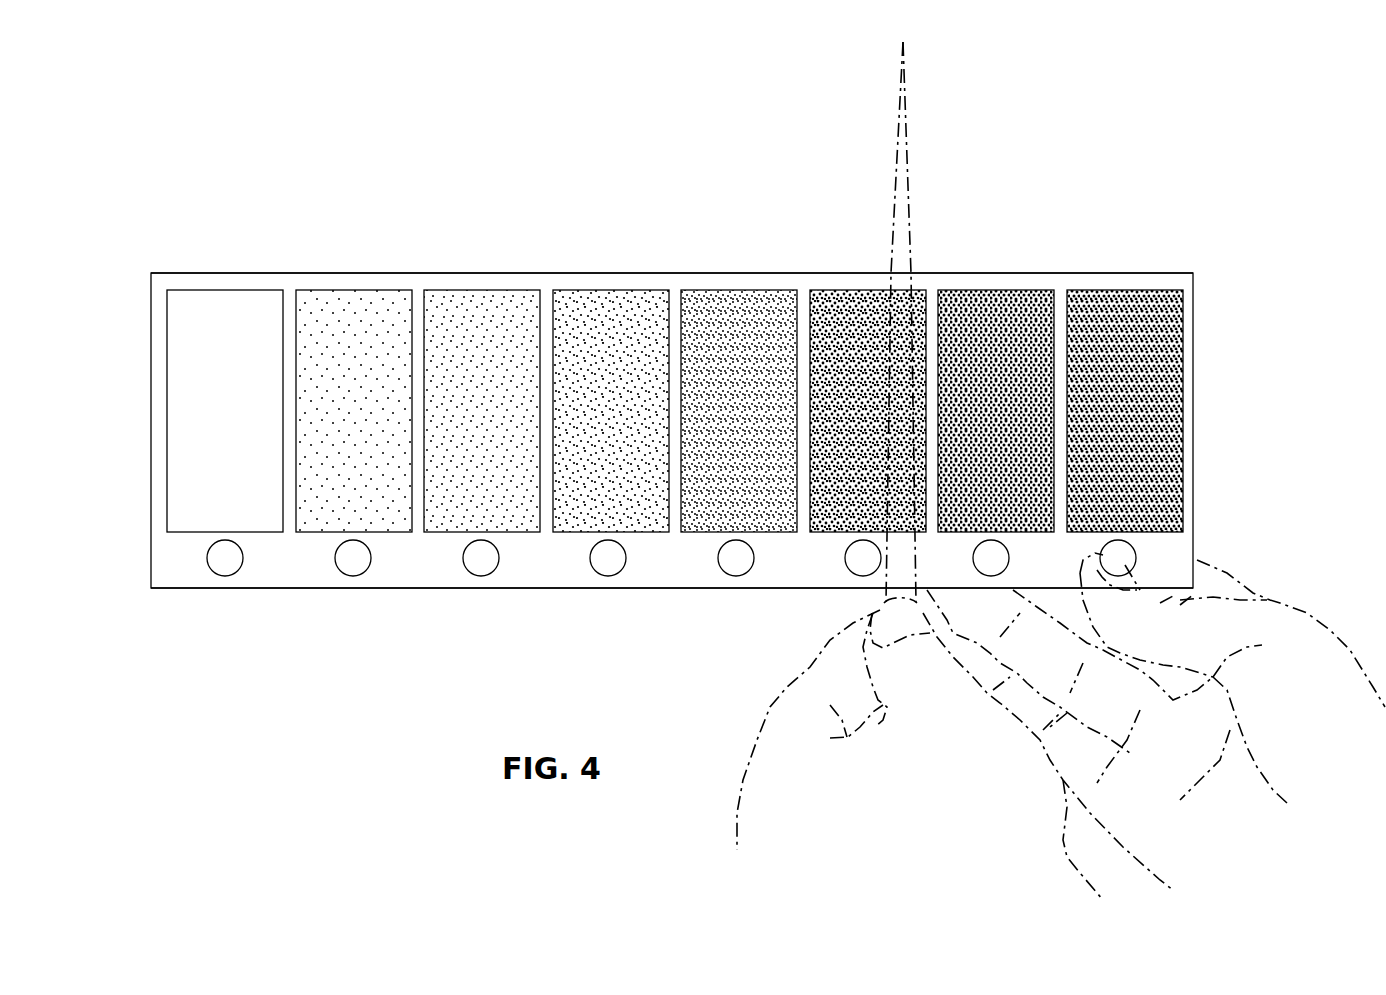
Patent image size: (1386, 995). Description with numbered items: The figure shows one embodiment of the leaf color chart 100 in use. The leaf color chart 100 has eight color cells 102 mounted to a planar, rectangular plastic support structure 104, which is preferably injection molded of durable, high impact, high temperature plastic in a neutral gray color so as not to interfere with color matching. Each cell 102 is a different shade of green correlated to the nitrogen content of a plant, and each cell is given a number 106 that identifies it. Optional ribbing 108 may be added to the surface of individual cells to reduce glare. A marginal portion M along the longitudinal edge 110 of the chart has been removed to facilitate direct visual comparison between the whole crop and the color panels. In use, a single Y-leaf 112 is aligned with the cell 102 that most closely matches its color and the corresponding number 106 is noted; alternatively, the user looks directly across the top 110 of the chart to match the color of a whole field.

The leaf color chart 100 is at (212, 201).
The color cells 102 is at (607, 327).
The support structure 104 is at (543, 577).
The number 106 is at (482, 577).
The ribbing 108 is at (250, 308).
The longitudinal edge 110 is at (427, 273).
The single leaf 112 is at (915, 196).
The marginal portion M is at (523, 283).